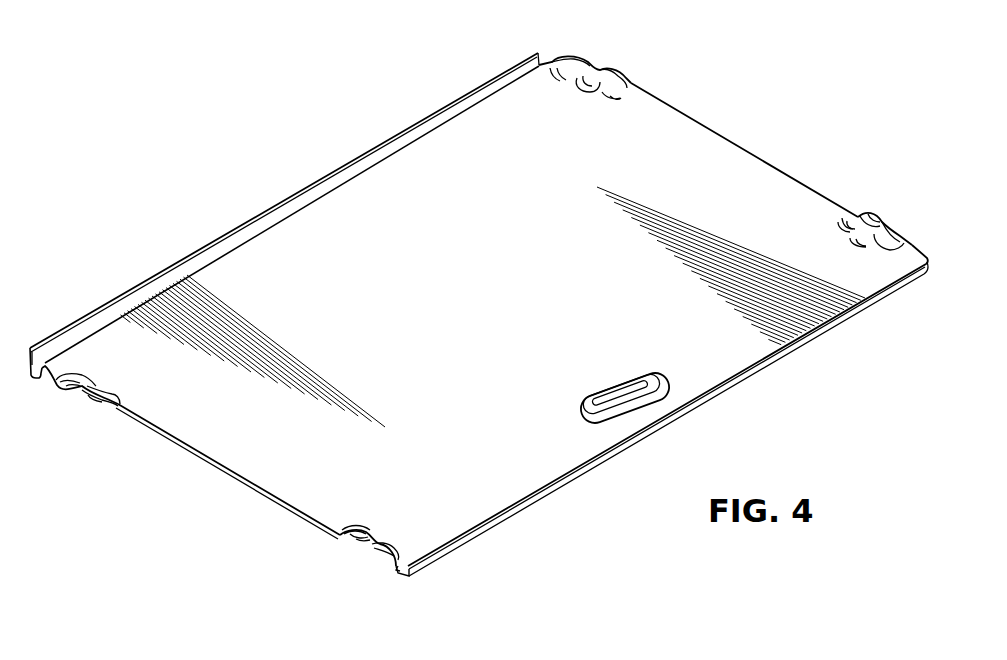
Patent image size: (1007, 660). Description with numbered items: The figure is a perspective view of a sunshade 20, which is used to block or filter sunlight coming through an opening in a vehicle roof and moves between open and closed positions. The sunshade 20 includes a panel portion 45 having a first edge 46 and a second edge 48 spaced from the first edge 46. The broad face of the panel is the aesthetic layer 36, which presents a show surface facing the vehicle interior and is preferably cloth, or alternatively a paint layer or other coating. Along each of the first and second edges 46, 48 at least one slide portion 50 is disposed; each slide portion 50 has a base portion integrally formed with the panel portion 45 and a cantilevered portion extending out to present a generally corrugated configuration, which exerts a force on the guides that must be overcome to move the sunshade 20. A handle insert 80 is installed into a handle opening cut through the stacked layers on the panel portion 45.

The sunshade 20 is at (343, 110).
The aesthetic layer 36 is at (463, 307).
The panel portion 45 is at (475, 497).
The first edge 46 is at (724, 140).
The second edge 48 is at (210, 466).
The slide portion 50 is at (605, 66).
The handle insert 80 is at (648, 386).